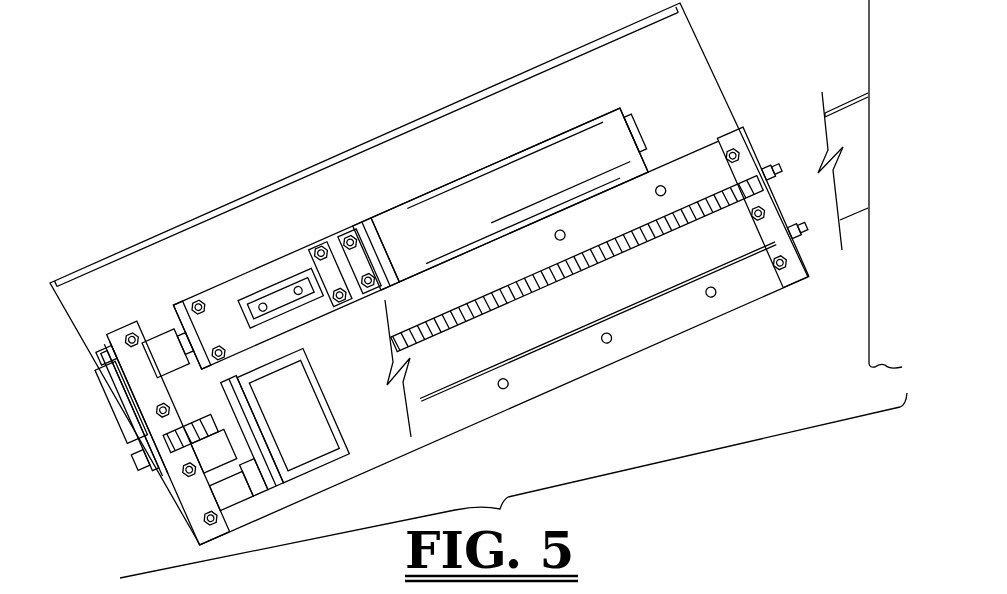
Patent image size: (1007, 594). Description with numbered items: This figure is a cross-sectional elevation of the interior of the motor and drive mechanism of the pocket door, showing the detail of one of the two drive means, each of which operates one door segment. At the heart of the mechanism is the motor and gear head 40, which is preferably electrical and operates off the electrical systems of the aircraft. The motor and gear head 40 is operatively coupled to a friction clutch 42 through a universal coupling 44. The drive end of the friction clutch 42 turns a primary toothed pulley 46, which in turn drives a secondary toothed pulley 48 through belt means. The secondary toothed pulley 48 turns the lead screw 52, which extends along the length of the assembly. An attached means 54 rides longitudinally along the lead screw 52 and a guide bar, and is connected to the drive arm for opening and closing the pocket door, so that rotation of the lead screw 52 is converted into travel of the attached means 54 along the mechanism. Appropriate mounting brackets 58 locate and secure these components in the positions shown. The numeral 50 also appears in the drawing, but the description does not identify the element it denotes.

The motor and gear head 40 is at (480, 226).
The friction clutch 42 is at (148, 342).
The universal coupling 44 is at (288, 300).
The primary toothed pulley 46 is at (100, 362).
The secondary toothed pulley 48 is at (153, 468).
The mounting block 50 is at (127, 405).
The lead screw 52 is at (568, 270).
The attached means 54 is at (311, 423).
The mounting brackets 58 is at (131, 333).